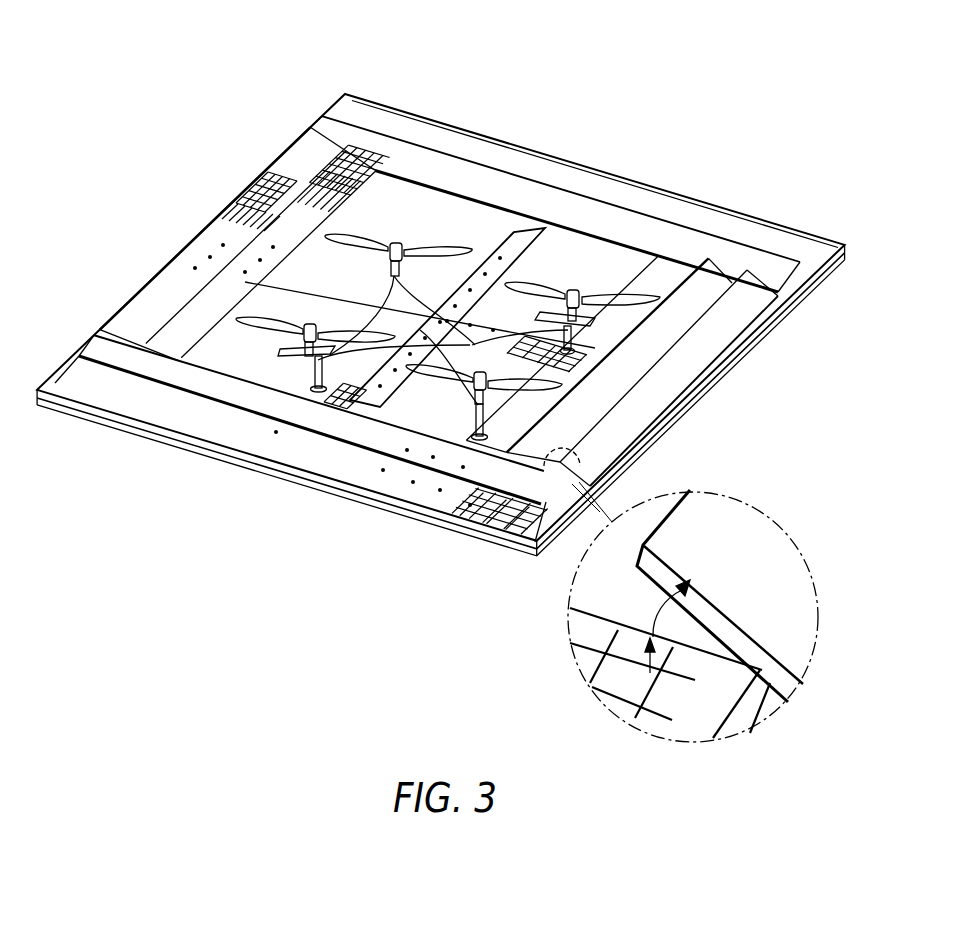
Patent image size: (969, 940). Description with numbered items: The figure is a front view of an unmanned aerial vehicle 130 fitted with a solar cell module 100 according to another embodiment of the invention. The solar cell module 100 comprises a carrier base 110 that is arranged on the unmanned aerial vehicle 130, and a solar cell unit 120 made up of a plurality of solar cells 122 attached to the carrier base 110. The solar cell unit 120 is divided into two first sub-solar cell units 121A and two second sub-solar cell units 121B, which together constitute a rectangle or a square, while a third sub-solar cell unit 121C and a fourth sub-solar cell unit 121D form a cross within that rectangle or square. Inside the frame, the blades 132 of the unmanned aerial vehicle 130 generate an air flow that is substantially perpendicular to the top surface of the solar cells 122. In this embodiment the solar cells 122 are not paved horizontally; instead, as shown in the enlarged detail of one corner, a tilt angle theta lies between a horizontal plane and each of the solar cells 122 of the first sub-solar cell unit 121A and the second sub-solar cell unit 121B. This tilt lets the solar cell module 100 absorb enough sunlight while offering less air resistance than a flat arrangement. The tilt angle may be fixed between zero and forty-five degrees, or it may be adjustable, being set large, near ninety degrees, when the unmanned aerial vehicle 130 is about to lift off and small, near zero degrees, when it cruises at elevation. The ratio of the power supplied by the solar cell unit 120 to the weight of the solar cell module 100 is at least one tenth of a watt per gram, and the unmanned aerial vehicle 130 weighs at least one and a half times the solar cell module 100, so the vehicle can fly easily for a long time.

The solar cell module 100 is at (359, 47).
The carrier base 110 is at (390, 110).
The solar cell unit 120 is at (738, 228).
The first sub-solar cell unit 121A is at (605, 197).
The second sub-solar cell unit 121B is at (147, 300).
The third sub-solar cell unit 121C is at (540, 224).
The fourth sub-solar cell unit 121D is at (243, 258).
The solar cell 122 is at (506, 470).
The unmanned aerial vehicle 130 is at (400, 496).
The blade 132 is at (522, 398).